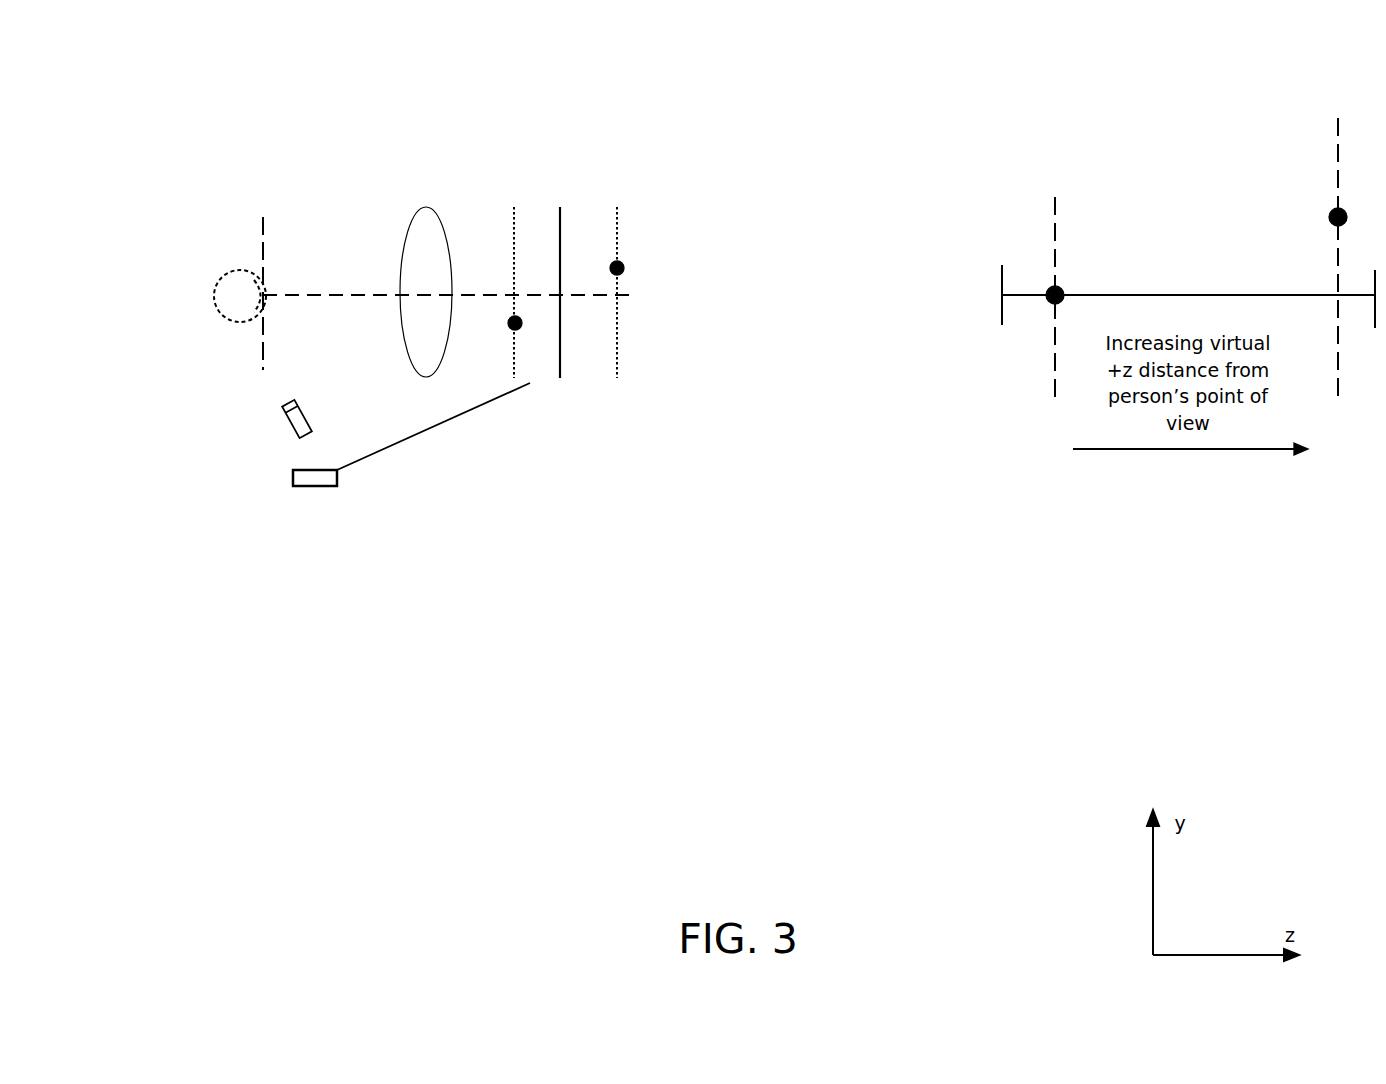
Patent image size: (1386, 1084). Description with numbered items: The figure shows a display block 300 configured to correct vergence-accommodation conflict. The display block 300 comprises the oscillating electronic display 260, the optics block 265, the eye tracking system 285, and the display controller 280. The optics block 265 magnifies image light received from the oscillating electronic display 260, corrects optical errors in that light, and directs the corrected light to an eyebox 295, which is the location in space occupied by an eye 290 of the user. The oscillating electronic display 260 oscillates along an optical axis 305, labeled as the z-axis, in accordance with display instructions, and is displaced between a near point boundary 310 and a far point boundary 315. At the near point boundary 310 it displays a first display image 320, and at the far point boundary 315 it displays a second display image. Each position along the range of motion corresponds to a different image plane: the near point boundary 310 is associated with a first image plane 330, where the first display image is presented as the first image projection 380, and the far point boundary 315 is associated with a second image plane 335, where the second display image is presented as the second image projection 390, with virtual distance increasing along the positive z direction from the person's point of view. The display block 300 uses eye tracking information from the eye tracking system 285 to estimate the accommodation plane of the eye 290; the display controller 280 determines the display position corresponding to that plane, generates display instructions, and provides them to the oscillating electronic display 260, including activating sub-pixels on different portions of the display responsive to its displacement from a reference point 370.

The display block 300 is at (165, 80).
The oscillating electronic display 260 is at (561, 257).
The optics block 265 is at (427, 208).
The display controller 280 is at (338, 488).
The eye tracking system 285 is at (297, 440).
The eye 290 is at (222, 279).
The eyebox 295 is at (264, 248).
The optical axis 305 is at (377, 295).
The near point boundary 310 is at (514, 383).
The far point boundary 315 is at (617, 378).
The first display image 320 is at (622, 262).
The first image plane 330 is at (1055, 197).
The second image plane 335 is at (1338, 118).
The reference point 370 is at (560, 378).
The first image projection 380 is at (1053, 303).
The second image projection 390 is at (1342, 226).